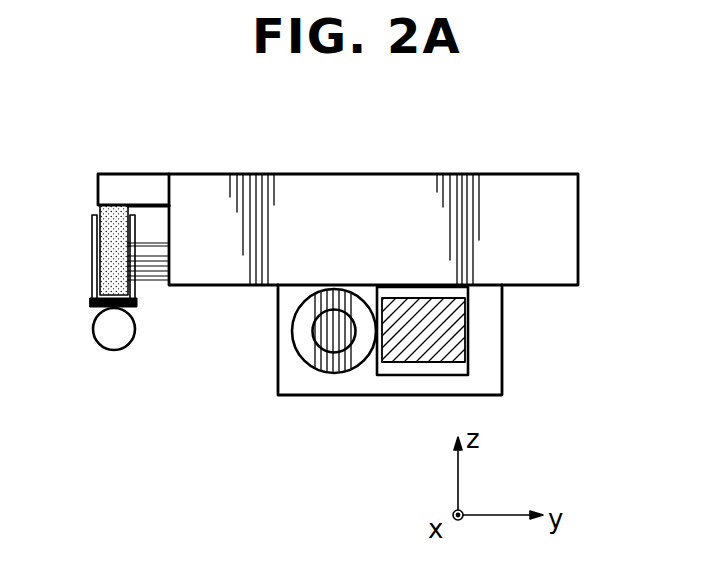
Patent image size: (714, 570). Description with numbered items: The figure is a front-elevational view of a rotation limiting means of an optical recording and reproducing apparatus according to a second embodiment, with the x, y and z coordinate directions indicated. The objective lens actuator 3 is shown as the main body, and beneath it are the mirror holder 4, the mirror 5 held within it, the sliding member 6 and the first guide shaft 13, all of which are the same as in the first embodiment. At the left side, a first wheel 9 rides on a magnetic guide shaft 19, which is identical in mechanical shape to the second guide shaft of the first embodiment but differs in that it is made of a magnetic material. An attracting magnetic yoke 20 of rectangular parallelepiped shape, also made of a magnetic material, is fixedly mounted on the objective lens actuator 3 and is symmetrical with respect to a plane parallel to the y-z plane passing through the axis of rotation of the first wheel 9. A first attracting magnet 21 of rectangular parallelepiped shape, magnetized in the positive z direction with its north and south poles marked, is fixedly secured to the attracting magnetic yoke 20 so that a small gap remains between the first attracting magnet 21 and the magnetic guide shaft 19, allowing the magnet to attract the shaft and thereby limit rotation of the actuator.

The objective lens actuator 3 is at (567, 232).
The mirror holder 4 is at (493, 328).
The mirror 5 is at (452, 343).
The sliding member 6 is at (299, 365).
The first wheel 9 is at (92, 273).
The first guide shaft 13 is at (318, 335).
The magnetic guide shaft 19 is at (97, 337).
The attracting magnetic yoke 20 is at (130, 176).
The first attracting magnet 21 is at (103, 240).